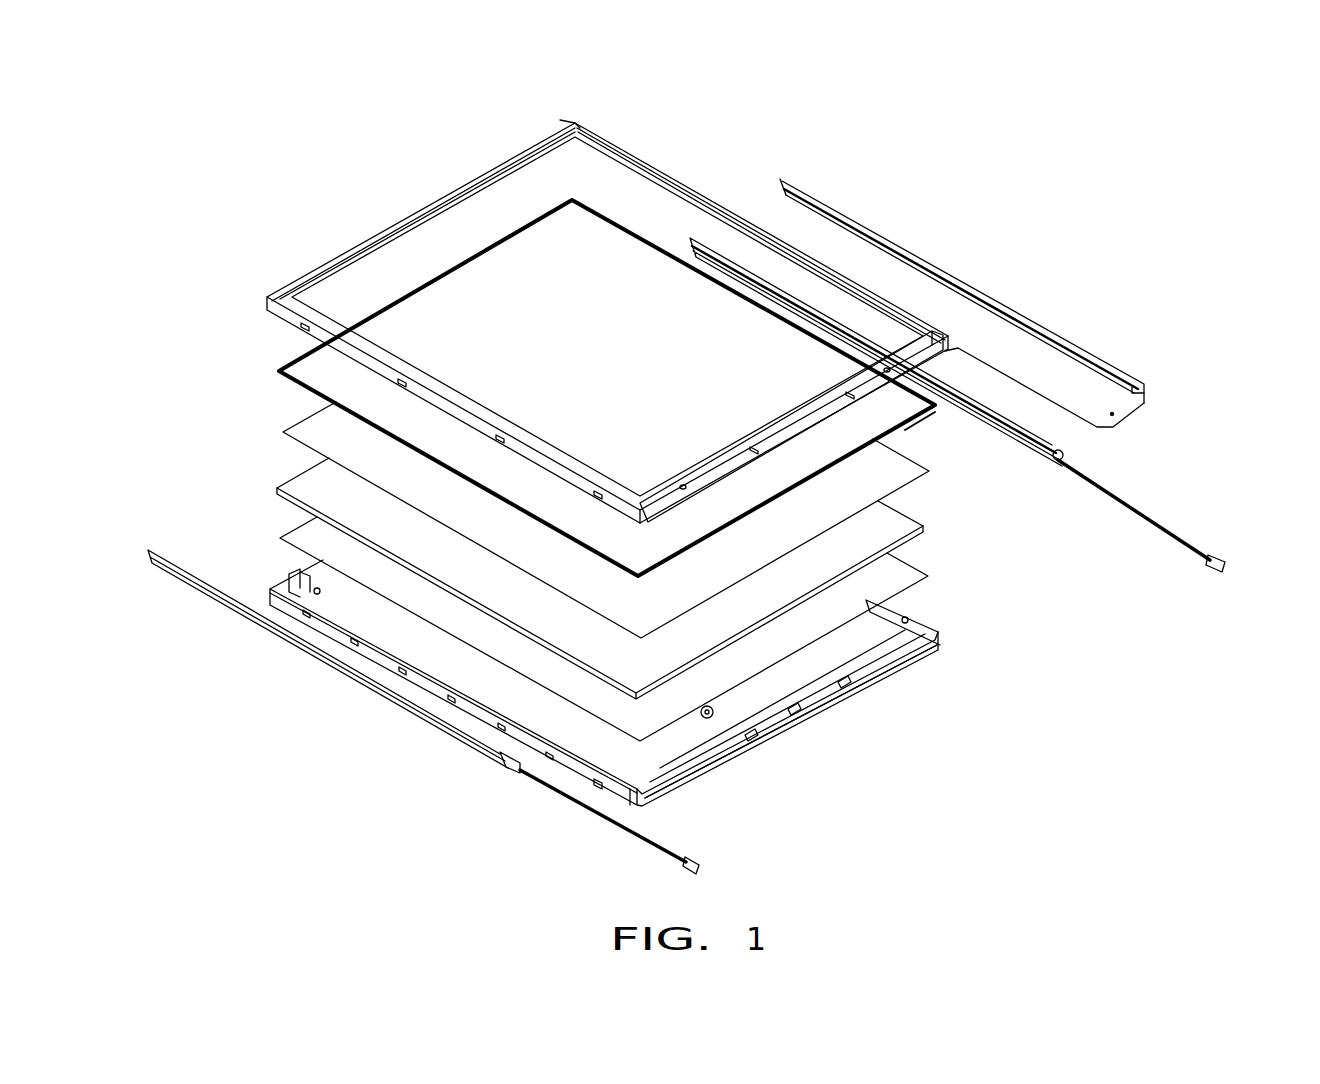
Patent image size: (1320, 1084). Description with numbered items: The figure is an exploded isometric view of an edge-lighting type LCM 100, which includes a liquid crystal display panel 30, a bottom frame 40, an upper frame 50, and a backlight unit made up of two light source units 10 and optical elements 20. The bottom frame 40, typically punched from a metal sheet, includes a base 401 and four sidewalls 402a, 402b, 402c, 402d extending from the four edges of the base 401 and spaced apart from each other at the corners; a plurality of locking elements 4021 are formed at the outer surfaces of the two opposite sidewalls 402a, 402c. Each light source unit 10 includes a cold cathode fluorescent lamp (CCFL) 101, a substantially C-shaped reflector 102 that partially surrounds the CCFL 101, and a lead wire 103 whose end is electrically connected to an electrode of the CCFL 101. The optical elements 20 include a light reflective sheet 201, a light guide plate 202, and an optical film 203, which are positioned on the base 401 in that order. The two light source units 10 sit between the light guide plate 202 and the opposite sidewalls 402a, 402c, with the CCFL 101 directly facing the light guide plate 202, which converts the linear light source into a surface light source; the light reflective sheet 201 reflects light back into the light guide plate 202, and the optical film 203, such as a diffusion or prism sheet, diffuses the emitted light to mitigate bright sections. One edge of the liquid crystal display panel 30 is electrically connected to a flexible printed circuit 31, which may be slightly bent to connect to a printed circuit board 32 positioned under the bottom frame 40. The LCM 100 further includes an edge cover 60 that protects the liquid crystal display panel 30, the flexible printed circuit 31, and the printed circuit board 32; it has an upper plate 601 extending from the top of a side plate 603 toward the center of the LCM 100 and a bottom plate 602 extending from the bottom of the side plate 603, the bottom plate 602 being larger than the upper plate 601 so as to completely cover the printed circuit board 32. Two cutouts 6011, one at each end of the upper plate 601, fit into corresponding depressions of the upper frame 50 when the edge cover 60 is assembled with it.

The LCM 100 is at (993, 133).
The light source unit 10 is at (686, 556).
The cold cathode fluorescent lamp (CCFL) 101 is at (1028, 447).
The reflector 102 is at (270, 625).
The lead wire 103 is at (1158, 530).
The optical elements 20 is at (538, 556).
The light reflective sheet 201 is at (568, 620).
The light guide plate 202 is at (302, 486).
The optical film 203 is at (303, 420).
The liquid crystal display panel 30 is at (612, 388).
The flexible printed circuit 31 is at (922, 403).
The printed circuit board 32 is at (912, 428).
The bottom frame 40 is at (632, 706).
The base 401 is at (790, 690).
The sidewall 402a is at (920, 614).
The sidewall 402b is at (297, 576).
The sidewall 402c is at (632, 800).
The sidewall 402d is at (870, 665).
The locking element 4021 is at (598, 788).
The upper frame 50 is at (447, 200).
The edge cover 60 is at (1015, 313).
The upper plate 601 is at (1100, 370).
The cutout 6011 is at (785, 182).
The bottom plate 602 is at (1118, 414).
The side plate 603 is at (1147, 398).